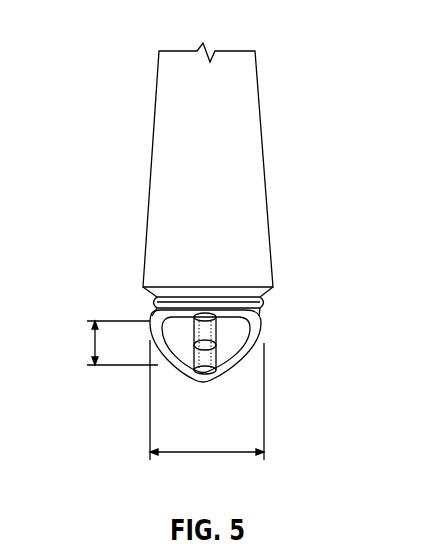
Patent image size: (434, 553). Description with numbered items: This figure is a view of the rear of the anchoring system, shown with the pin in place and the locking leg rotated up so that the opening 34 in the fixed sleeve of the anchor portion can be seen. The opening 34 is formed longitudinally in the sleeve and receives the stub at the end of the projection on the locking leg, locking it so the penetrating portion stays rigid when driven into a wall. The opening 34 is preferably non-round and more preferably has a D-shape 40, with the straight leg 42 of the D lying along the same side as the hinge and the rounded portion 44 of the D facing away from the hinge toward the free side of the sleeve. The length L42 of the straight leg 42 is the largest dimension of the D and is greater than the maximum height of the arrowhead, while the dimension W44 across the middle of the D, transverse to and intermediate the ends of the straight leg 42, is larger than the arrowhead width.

The opening 34 is at (241, 336).
The D-shape 40 is at (238, 307).
The straight leg 42 is at (158, 318).
The rounded portion 44 is at (168, 362).
The width dimension across the middle of the D W44 is at (95, 343).
The length of the straight leg L42 is at (190, 452).